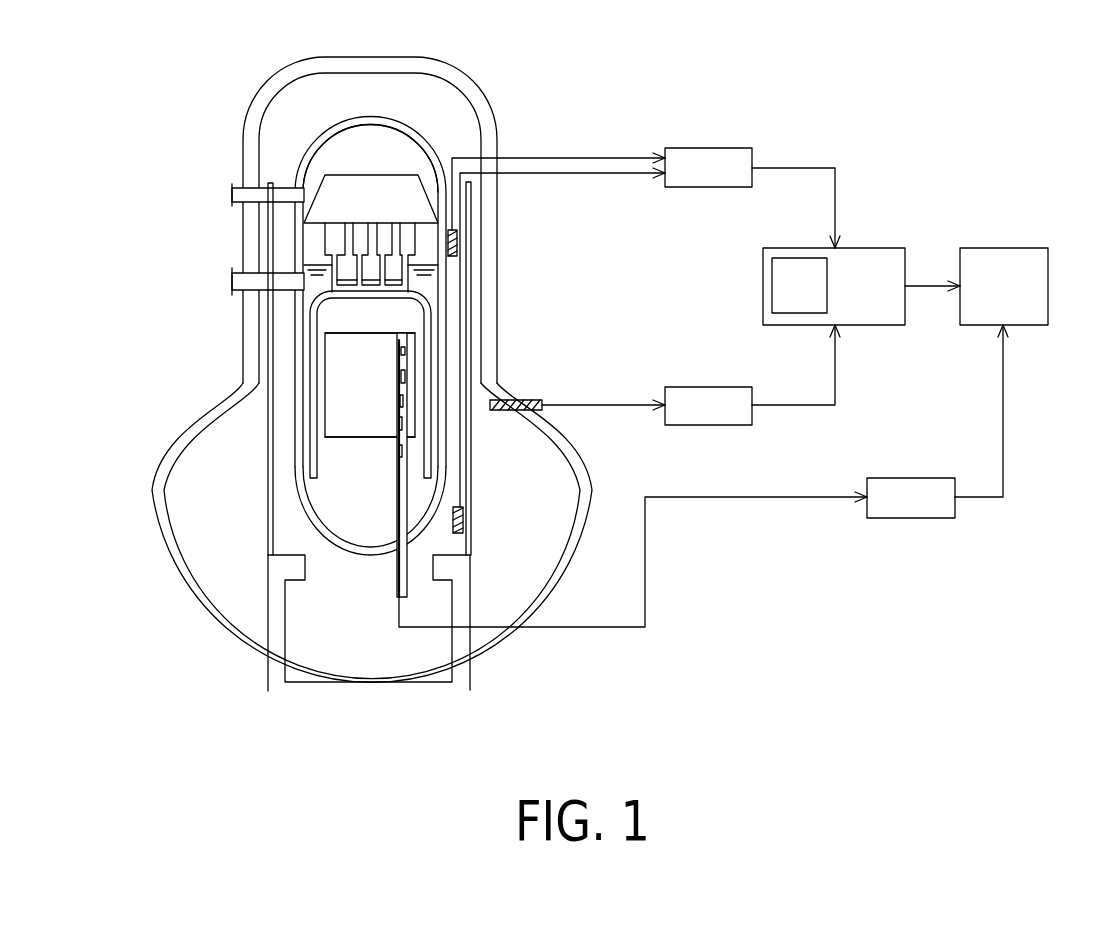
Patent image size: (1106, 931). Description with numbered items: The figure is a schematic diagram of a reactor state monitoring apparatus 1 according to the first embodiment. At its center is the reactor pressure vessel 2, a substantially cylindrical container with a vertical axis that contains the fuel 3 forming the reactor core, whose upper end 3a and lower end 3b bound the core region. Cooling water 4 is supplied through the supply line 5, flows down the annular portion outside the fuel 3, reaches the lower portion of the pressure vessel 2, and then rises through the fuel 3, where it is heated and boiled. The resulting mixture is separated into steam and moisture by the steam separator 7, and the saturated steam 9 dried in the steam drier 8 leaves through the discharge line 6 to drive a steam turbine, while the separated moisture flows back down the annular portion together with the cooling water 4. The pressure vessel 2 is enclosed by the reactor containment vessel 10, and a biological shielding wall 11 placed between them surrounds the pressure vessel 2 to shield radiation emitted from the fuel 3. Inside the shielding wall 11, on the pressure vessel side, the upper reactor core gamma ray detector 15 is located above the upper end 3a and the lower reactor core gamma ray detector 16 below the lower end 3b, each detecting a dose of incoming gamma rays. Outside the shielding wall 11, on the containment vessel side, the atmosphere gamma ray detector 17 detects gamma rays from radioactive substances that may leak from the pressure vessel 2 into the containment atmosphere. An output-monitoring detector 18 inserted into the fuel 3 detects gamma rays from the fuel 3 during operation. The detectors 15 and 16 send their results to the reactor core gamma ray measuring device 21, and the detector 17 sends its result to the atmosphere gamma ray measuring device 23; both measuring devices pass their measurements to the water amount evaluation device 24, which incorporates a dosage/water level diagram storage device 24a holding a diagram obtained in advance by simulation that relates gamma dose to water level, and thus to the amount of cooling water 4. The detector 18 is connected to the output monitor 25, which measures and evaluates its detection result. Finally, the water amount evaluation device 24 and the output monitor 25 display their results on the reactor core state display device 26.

The reactor state monitoring apparatus 1 is at (760, 658).
The reactor pressure vessel 2 is at (371, 117).
The fuel 3 is at (362, 415).
The upper end 3a is at (363, 332).
The lower end 3b is at (363, 438).
The cooling water 4 is at (345, 500).
The supply line 5 is at (243, 283).
The discharge line 6 is at (243, 196).
The steam separator 7 is at (417, 253).
The steam drier 8 is at (426, 197).
The saturated steam 9 is at (366, 149).
The reactor containment vessel 10 is at (244, 152).
The biological shielding wall 11 is at (268, 362).
The upper reactor core gamma ray detector 15 is at (458, 240).
The lower reactor core gamma ray detector 16 is at (464, 517).
The atmosphere gamma ray detector 17 is at (527, 399).
The output-monitoring detector 18 is at (404, 413).
The reactor core gamma ray measuring device 21 is at (734, 148).
The atmosphere gamma ray measuring device 23 is at (734, 387).
The water amount evaluation device 24 is at (883, 248).
The dosage/water level diagram storage device 24a is at (828, 285).
The output monitor 25 is at (934, 478).
The reactor core state display device 26 is at (1025, 248).